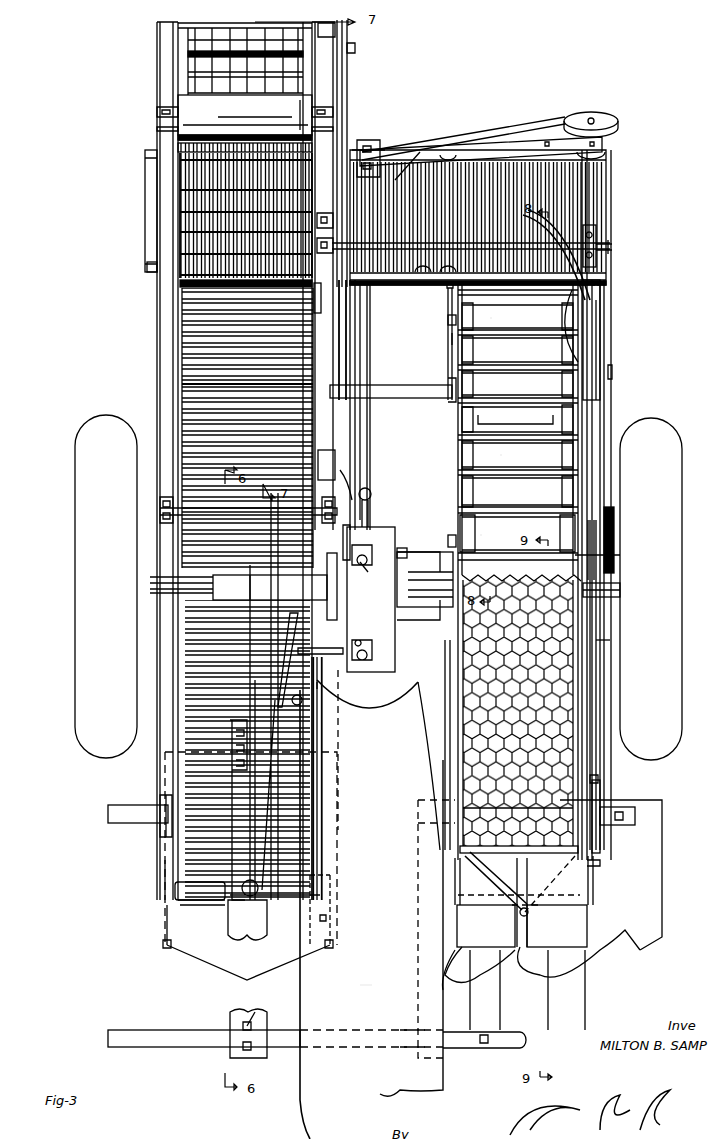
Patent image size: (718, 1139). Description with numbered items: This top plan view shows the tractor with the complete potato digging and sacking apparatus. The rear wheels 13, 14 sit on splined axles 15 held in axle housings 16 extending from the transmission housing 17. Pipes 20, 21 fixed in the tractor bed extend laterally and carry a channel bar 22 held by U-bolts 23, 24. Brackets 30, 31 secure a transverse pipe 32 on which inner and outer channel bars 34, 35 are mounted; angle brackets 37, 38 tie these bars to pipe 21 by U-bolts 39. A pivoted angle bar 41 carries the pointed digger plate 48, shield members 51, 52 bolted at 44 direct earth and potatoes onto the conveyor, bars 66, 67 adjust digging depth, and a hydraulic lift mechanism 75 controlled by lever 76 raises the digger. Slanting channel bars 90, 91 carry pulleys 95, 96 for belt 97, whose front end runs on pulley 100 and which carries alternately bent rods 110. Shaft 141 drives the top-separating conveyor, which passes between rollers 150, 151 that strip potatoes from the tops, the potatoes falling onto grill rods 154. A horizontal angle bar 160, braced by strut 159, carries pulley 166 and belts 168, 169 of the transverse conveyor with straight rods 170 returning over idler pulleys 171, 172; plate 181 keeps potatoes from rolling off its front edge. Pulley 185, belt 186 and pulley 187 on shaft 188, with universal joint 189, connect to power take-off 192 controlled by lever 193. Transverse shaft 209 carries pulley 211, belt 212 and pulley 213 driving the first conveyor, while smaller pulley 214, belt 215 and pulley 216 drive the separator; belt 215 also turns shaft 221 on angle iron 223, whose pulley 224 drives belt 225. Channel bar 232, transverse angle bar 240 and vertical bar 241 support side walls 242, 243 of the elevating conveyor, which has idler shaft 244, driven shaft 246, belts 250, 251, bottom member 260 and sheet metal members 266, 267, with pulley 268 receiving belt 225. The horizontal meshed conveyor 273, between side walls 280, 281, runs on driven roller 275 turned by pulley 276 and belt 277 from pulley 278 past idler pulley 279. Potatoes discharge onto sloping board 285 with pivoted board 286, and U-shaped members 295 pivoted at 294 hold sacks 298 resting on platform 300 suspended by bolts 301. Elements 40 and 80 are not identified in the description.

The rear wheel 13 is at (75, 580).
The rear wheel 14 is at (683, 603).
The splined axle 15 is at (140, 578).
The axle housing 16 is at (275, 587).
The transmission housing 17 is at (388, 525).
The pipe 20 is at (118, 1028).
The pipe 21 is at (116, 803).
The channel bar 22 is at (240, 1010).
The U-bolt 23 is at (255, 1010).
The U-bolt 24 is at (235, 808).
The bracket 30 is at (343, 545).
The bracket 31 is at (403, 545).
The transverse pipe 32 is at (428, 553).
The inner channel bar 34 is at (165, 745).
The outer channel bar 35 is at (307, 630).
The angle bracket 37 is at (158, 828).
The angle bracket 38 is at (325, 830).
The U-bolt 39 is at (160, 797).
The frame 40 is at (369, 993).
The angle bar 41 is at (165, 862).
The bolt 44 is at (345, 944).
The digger plate 48 is at (212, 962).
The shield member 51 is at (167, 917).
The shield member 52 is at (330, 918).
The bar 66 is at (175, 893).
The bar 67 is at (333, 893).
The hydraulic lift mechanism 75 is at (338, 650).
The lever 76 is at (372, 638).
The gear box 80 is at (248, 587).
The channel bar 90 is at (172, 348).
The channel bar 91 is at (325, 276).
The pulley 95 is at (180, 307).
The pulley 96 is at (318, 305).
The conveyor belt 97 is at (182, 388).
The pulley 100 is at (178, 908).
The rod 110 is at (195, 328).
The shaft 141 is at (352, 38).
The roller 150 is at (248, 88).
The roller 151 is at (284, 113).
The rods forming a grill 154 is at (200, 60).
The strut 159 is at (500, 135).
The angle bar 160 is at (605, 146).
The pulley 166 is at (604, 155).
The belt 168 is at (405, 145).
The belt 169 is at (530, 335).
The rod 170 is at (608, 192).
The idler pulley 171 is at (150, 150).
The idler pulley 172 is at (147, 268).
The plate 181 is at (440, 290).
The pulley 185 is at (598, 113).
The belt 186 is at (546, 118).
The pulley 187 is at (382, 135).
The shaft 188 is at (372, 340).
The universal joint 189 is at (372, 492).
The power take-off 192 is at (376, 571).
The lever 193 is at (366, 548).
The transverse shaft 209 is at (323, 465).
The pulley 211 is at (351, 481).
The belt 212 is at (362, 436).
The pulley 213 is at (358, 307).
The smaller pulley 214 is at (345, 330).
The belt 215 is at (350, 110).
The pulley 216 is at (355, 50).
The shaft 221 is at (614, 248).
The angle iron 223 is at (600, 300).
The pulley 224 is at (602, 240).
The belt 225 is at (612, 374).
The channel bar 232 is at (600, 700).
The transverse angle bar 240 is at (418, 388).
The vertical bar 241 is at (448, 400).
The side wall 242 is at (600, 345).
The side wall 243 is at (452, 340).
The idler shaft 244 is at (448, 323).
The driven shaft 246 is at (450, 534).
The belt 250 is at (565, 386).
The belt 251 is at (462, 420).
The bottom member 260 is at (515, 455).
The sheet metal member 266 is at (507, 317).
The sheet metal portion 267 is at (494, 537).
The pulley 268 is at (614, 525).
The horizontal meshed conveyor 273 is at (475, 742).
The driven roller 275 is at (515, 882).
The pulley 276 is at (600, 845).
The belt 277 is at (598, 762).
The pulley 278 is at (606, 555).
The idler pulley 279 is at (600, 779).
The side wall 280 is at (583, 650).
The side wall 281 is at (446, 642).
The sloping board 285 is at (558, 900).
The pivoted board 286 is at (500, 888).
The pivot 294 is at (590, 900).
The U-shaped member 295 is at (480, 945).
The sack 298 is at (579, 945).
The platform 300 is at (662, 880).
The bolt 301 is at (484, 1045).